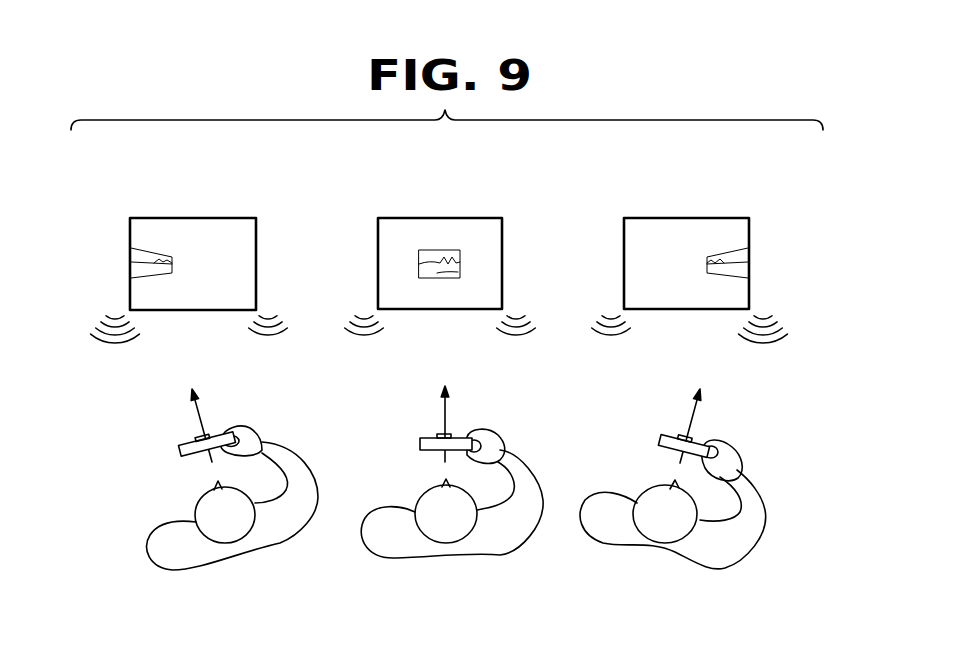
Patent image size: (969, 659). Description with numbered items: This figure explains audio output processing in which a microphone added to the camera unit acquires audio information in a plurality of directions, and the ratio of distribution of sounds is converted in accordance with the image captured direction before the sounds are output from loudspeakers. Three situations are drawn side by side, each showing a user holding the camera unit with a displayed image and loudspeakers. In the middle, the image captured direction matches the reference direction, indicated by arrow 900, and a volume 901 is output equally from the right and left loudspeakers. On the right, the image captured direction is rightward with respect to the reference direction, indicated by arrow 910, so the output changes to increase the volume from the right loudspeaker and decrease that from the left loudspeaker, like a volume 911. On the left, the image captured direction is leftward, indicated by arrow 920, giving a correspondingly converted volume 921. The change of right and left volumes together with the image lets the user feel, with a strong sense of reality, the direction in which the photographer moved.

The volume 901 is at (400, 218).
The volume 911 is at (646, 218).
The volume 921 is at (151, 218).
The arrow 900 is at (460, 436).
The arrow 910 is at (700, 443).
The arrow 920 is at (221, 433).